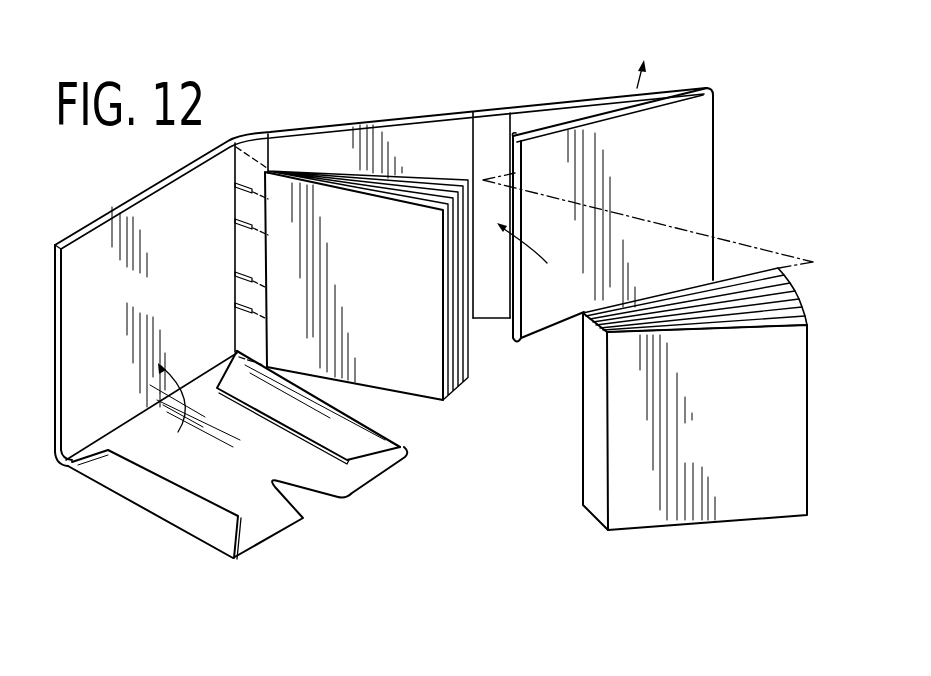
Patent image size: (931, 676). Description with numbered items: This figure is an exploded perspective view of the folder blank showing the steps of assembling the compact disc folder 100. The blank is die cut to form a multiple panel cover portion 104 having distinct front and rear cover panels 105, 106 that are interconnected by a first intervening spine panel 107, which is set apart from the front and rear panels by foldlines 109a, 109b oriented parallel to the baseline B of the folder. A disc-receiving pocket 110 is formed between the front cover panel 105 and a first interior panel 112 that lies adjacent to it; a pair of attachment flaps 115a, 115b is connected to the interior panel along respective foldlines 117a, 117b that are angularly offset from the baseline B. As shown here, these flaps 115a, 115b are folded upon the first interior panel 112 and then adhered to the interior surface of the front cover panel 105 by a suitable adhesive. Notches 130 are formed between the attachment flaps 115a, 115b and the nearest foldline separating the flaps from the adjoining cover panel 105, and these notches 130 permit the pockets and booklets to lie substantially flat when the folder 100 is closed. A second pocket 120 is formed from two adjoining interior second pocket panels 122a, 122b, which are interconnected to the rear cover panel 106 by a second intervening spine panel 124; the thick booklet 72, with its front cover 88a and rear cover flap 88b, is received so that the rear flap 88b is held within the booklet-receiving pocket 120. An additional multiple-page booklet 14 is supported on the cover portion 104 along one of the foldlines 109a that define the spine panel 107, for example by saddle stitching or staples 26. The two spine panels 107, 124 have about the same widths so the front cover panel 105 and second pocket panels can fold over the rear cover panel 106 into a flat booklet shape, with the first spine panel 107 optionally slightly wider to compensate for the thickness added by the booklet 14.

The compact disc folder 100 is at (132, 180).
The disc-receiving pocket 110 is at (80, 265).
The front cover panel 105 is at (152, 300).
The staples 26 is at (235, 188).
The foldline 109a is at (236, 204).
The foldline 109b is at (270, 148).
The first intervening spine panel 107 is at (250, 150).
The multiple panel cover portion 104 is at (373, 123).
The rear cover panel 106 is at (403, 143).
The second intervening spine panel 124 is at (483, 123).
The second pocket 120 is at (534, 122).
The second pocket panel 122a is at (653, 100).
The second pocket panel 122b is at (675, 187).
The baseline B is at (480, 320).
The booklet portion 14 is at (368, 283).
The notches 130 is at (77, 449).
The first interior panel 112 is at (242, 465).
The attachment flap 115a is at (165, 497).
The foldline 117a is at (193, 540).
The attachment flap 115b is at (352, 438).
The foldline 117b is at (407, 445).
The thick booklet 72 is at (594, 463).
The booklet front cover 88a is at (730, 451).
The booklet rear cover flap 88b is at (763, 267).